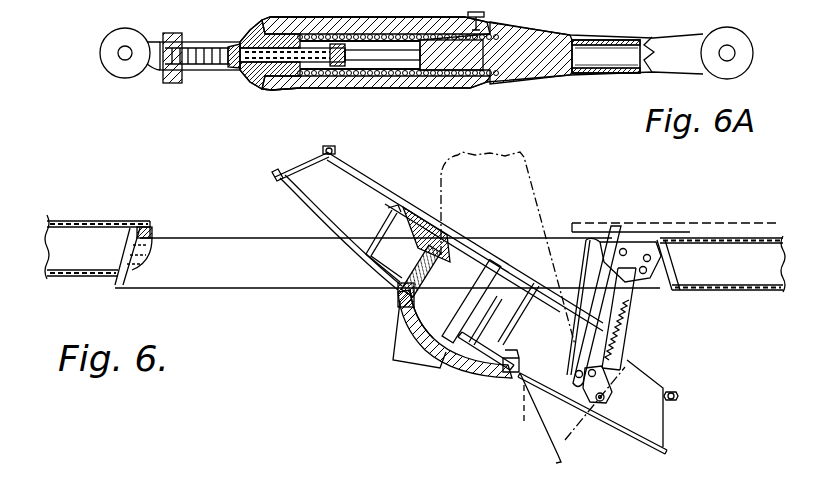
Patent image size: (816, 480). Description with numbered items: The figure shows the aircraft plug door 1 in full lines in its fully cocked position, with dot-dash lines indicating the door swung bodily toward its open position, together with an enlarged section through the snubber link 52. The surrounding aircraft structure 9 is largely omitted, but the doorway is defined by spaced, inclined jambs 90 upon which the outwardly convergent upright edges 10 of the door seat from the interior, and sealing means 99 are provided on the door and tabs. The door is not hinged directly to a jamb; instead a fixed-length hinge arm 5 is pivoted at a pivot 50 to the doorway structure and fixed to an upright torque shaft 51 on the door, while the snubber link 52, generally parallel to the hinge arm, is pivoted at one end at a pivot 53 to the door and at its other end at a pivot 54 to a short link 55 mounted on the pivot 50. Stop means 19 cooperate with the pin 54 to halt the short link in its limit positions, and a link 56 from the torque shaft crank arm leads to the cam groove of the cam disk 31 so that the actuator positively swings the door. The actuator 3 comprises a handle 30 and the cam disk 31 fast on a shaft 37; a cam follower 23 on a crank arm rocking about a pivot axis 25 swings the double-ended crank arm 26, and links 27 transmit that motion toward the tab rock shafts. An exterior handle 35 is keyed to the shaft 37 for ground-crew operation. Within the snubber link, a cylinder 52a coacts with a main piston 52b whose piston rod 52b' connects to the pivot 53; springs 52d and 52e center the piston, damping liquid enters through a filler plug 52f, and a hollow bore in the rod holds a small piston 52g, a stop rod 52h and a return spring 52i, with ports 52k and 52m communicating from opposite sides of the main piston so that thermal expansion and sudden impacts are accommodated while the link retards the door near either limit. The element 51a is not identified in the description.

In FIG. 6, the door 1 is at (290, 211).
In FIG. 6, the actuator 3 is at (399, 312).
In FIG. 6, the hinge arm 5 is at (603, 318).
In FIG. 6, the aircraft structure 9 is at (75, 221).
In FIG. 6, the upright edges 10 is at (293, 167).
In FIG. 6, the stop means 19 is at (600, 255).
In FIG. 6, the cam follower 23 is at (415, 318).
In FIG. 6, the pivot axis 25 is at (397, 293).
In FIG. 6, the double-ended crank arm 26 is at (430, 290).
In FIG. 6, the links 27 is at (403, 261).
In FIG. 6, the handle 30 is at (407, 362).
In FIG. 6, the cam disk 31 is at (482, 374).
In FIG. 6, the handle 35 is at (457, 238).
In FIG. 6, the shaft 37 is at (493, 273).
In FIG. 6, the pivot 50 is at (625, 249).
In FIG. 6, the torque shaft 51 is at (530, 405).
In FIG. 6, the rod end 51a is at (530, 296).
In FIG. 6A, the snubber link 52 is at (372, 12).
In FIG. 6, the snubber link 52 is at (627, 307).
In FIG. 6A, the cylinder 52a is at (413, 23).
In FIG. 6, the cylinder 52a is at (635, 330).
In FIG. 6A, the piston 52b is at (386, 81).
In FIG. 6A, the piston rod 52b' is at (200, 38).
In FIG. 6A, the spring 52d is at (310, 80).
In FIG. 6A, the spring 52e is at (473, 73).
In FIG. 6A, the filler plug 52f is at (479, 14).
In FIG. 6A, the piston 52g is at (303, 30).
In FIG. 6A, the stop rod 52h is at (236, 66).
In FIG. 6A, the return spring 52i is at (240, 47).
In FIG. 6A, the port 52k is at (347, 77).
In FIG. 6A, the port 52m is at (477, 73).
In FIG. 6, the pivot 53 is at (527, 386).
In FIG. 6, the pivot 54 is at (652, 271).
In FIG. 6, the short link 55 is at (638, 252).
In FIG. 6, the link 56 is at (510, 372).
In FIG. 6, the jambs 90 is at (153, 240).
In FIG. 6, the sealing means 99 is at (331, 148).